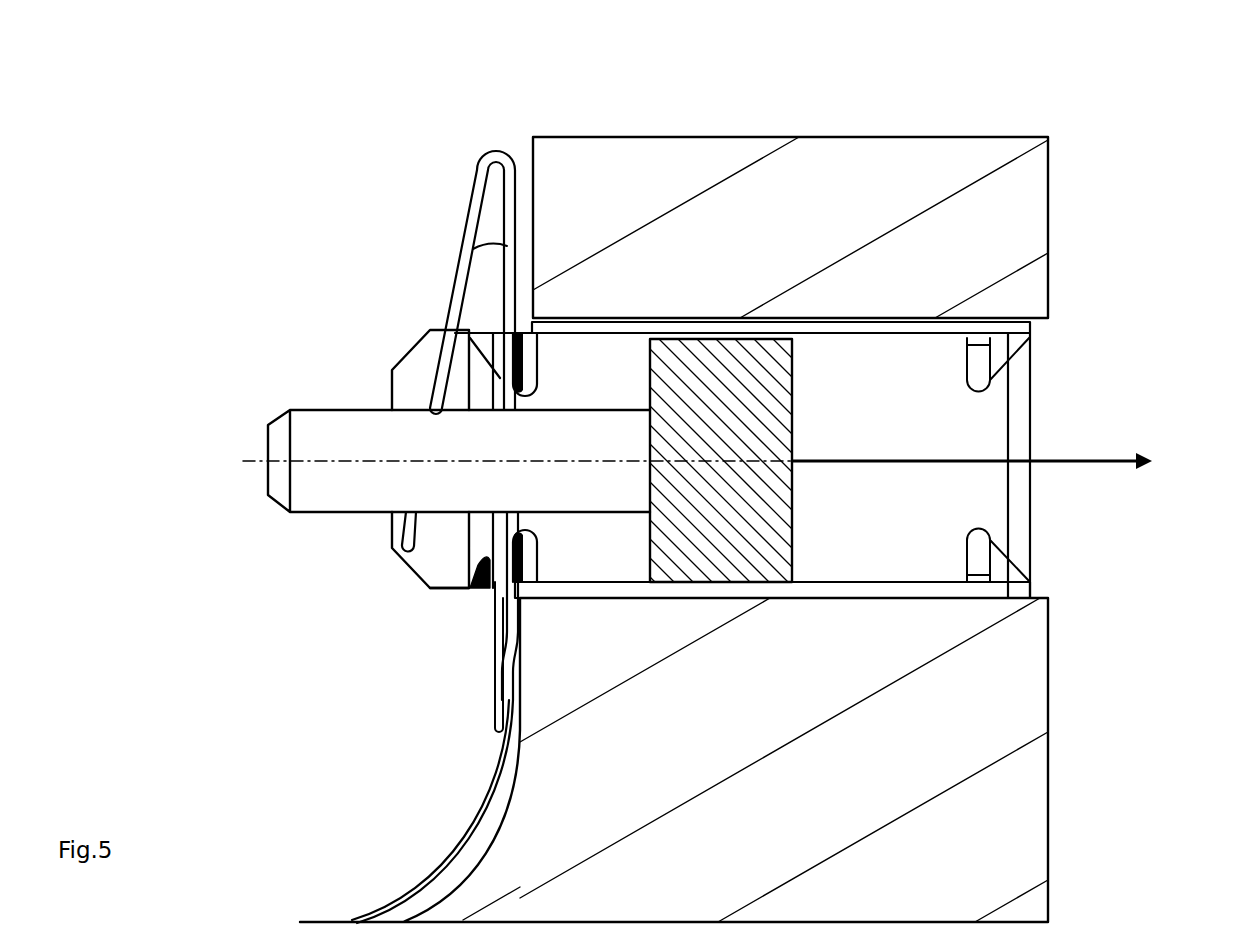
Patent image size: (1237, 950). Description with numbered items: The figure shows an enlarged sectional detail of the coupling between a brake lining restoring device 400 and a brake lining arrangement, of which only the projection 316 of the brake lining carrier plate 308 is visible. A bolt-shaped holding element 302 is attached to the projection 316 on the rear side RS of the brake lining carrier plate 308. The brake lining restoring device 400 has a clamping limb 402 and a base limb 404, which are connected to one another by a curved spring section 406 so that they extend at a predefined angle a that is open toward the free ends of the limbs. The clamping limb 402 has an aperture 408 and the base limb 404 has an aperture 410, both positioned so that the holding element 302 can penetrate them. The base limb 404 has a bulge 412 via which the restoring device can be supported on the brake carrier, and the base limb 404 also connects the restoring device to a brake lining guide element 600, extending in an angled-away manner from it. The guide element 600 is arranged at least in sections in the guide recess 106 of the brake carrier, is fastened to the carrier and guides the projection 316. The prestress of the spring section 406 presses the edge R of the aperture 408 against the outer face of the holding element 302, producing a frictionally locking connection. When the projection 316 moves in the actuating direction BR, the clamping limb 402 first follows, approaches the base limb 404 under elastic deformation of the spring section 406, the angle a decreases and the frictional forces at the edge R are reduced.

The guide recess 106 is at (925, 316).
The holding element 302 is at (268, 430).
The brake lining carrier plate 308 is at (688, 320).
The projection 316 is at (730, 380).
The brake lining restoring device 400 is at (412, 346).
The clamping limb 402 is at (447, 310).
The base limb 404 is at (505, 288).
The spring section 406 is at (497, 151).
The aperture 408 is at (425, 408).
The aperture 410 is at (495, 512).
The bulge 412 is at (510, 665).
The brake lining guide element 600 is at (998, 522).
The rear side RS is at (645, 322).
The actuating direction BR is at (994, 465).
The edge R is at (402, 512).
The angle a is at (488, 206).